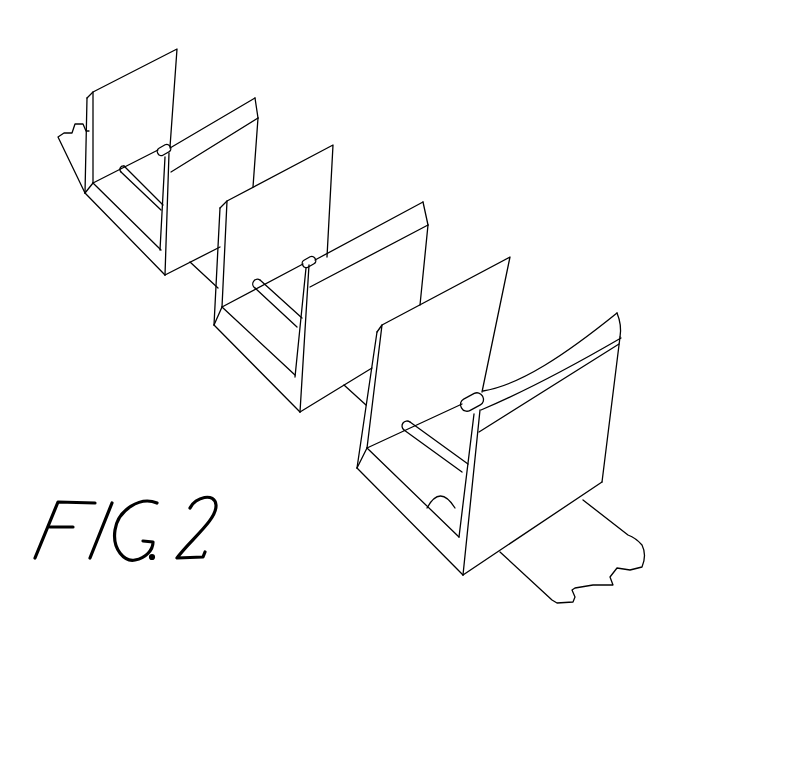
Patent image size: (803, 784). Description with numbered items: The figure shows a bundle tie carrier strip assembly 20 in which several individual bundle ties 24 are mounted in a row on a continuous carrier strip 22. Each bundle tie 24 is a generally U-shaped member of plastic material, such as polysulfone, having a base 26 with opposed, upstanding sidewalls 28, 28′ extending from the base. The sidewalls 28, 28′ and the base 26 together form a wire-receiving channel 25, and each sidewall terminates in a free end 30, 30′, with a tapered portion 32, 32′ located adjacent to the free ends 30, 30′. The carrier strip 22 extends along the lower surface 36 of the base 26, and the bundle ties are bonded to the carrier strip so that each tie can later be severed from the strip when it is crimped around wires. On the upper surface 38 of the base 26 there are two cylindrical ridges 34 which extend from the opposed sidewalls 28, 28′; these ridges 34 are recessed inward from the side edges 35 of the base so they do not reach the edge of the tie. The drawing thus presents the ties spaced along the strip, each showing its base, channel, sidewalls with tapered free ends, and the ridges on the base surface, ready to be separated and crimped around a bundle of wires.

The bundle tie carrier strip assembly 20 is at (164, 376).
The carrier strip 22 is at (617, 543).
The bundle tie 24 is at (167, 77).
The wire-receiving channel 25 is at (467, 300).
The base 26 is at (432, 473).
The sidewall 28 is at (557, 452).
The sidewall 28′ is at (362, 425).
The free end 30 is at (620, 314).
The free end 30′ is at (482, 275).
The tapered portion 32 is at (520, 402).
The tapered portion 32′ is at (338, 392).
The cylindrical ridge 34 is at (418, 412).
The side edge 35 is at (383, 482).
The lower surface 36 is at (440, 557).
The upper surface 38 is at (425, 504).